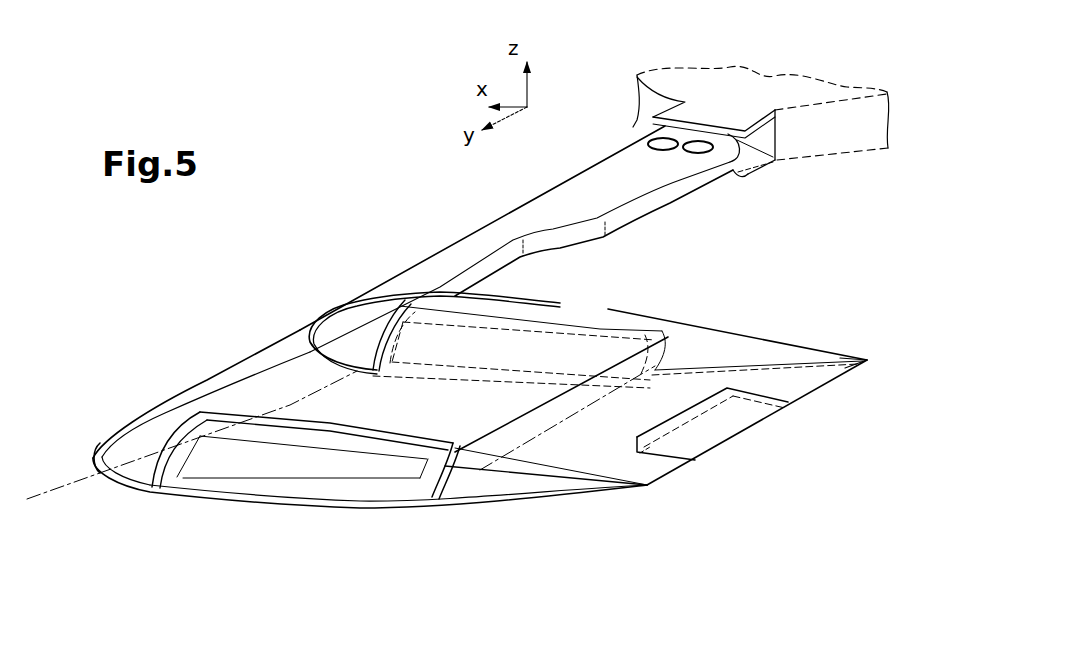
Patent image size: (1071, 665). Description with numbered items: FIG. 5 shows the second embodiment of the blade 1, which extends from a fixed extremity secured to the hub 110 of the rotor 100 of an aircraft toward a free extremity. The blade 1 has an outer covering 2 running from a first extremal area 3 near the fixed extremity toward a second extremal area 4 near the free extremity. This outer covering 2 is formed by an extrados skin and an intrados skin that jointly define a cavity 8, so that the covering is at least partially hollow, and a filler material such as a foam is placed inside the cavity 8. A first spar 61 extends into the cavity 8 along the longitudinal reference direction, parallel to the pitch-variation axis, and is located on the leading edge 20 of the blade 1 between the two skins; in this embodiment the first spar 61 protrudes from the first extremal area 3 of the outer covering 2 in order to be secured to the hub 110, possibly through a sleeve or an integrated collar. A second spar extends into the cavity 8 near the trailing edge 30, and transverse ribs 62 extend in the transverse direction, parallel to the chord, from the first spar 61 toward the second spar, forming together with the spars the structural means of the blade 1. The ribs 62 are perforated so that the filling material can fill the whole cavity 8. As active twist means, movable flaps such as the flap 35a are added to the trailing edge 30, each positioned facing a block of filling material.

The rotor 100 is at (333, 141).
The hub 110 is at (800, 93).
The blade 1 is at (221, 305).
The outer covering 2 is at (353, 288).
The first extremal area 3 is at (865, 378).
The second extremal area 4 is at (721, 477).
The cavity 8 is at (333, 460).
The leading edge 20 is at (93, 455).
The trailing edge 30 is at (673, 472).
The movable flap 35a is at (765, 415).
The first spar 61 is at (134, 444).
The transverse ribs 62 is at (265, 497).